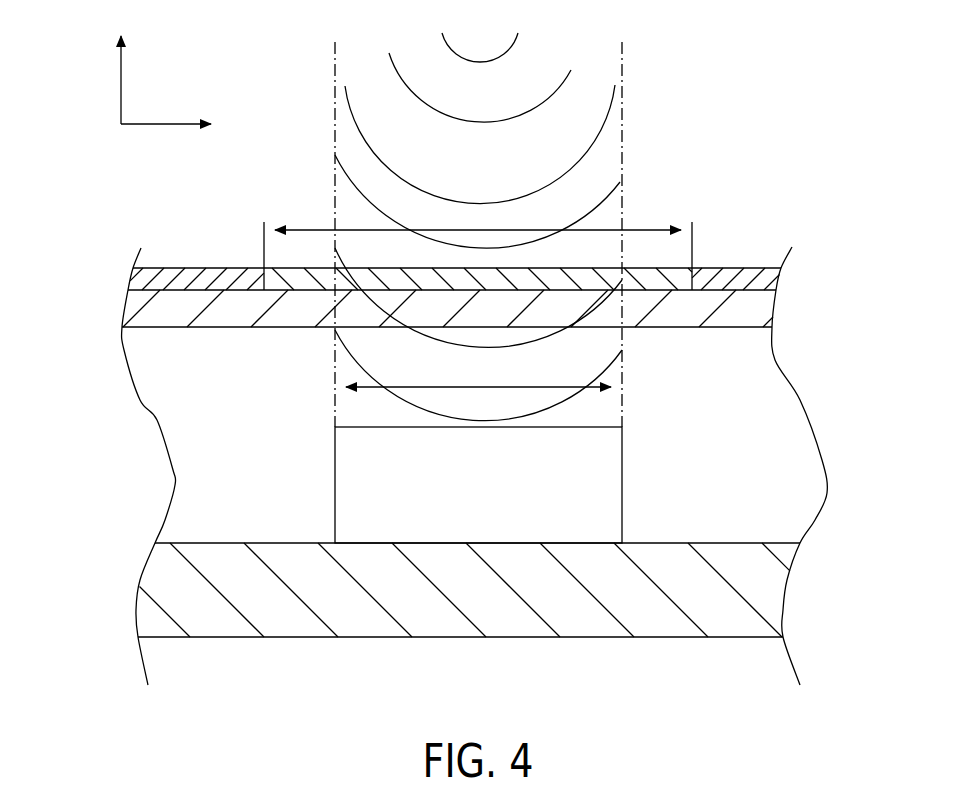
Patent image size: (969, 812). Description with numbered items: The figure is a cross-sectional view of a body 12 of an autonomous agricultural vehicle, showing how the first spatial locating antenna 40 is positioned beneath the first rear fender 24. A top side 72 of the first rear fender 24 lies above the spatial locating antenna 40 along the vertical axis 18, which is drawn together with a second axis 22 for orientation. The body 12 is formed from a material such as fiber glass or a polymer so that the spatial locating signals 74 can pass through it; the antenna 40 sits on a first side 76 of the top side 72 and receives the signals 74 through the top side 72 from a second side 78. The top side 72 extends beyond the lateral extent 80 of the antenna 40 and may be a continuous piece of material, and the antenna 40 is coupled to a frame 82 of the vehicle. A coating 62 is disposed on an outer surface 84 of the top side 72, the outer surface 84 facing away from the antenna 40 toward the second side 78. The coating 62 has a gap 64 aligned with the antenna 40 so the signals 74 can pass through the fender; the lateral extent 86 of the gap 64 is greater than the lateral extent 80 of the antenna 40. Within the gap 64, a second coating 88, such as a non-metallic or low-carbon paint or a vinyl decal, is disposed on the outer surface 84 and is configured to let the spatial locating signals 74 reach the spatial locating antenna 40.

The body 12 is at (248, 210).
The vertical axis 18 is at (121, 78).
The horizontal axis 22 is at (165, 126).
The first rear fender 24 is at (276, 200).
The first spatial locating antenna 40 is at (622, 483).
The coating 62 is at (188, 268).
The gap 64 is at (606, 152).
The top side 72 is at (233, 322).
The spatial locating signals 74 is at (543, 102).
The first side 76 is at (762, 364).
The second side 78 is at (764, 216).
The lateral extent 80 is at (478, 387).
The frame 82 is at (290, 622).
The outer surface 84 is at (226, 268).
The lateral extent of the gap 86 is at (478, 230).
The second coating 88 is at (480, 268).